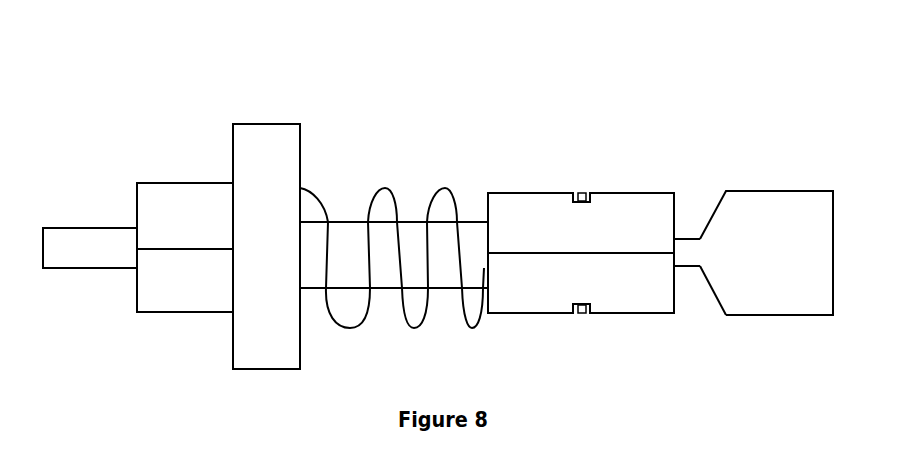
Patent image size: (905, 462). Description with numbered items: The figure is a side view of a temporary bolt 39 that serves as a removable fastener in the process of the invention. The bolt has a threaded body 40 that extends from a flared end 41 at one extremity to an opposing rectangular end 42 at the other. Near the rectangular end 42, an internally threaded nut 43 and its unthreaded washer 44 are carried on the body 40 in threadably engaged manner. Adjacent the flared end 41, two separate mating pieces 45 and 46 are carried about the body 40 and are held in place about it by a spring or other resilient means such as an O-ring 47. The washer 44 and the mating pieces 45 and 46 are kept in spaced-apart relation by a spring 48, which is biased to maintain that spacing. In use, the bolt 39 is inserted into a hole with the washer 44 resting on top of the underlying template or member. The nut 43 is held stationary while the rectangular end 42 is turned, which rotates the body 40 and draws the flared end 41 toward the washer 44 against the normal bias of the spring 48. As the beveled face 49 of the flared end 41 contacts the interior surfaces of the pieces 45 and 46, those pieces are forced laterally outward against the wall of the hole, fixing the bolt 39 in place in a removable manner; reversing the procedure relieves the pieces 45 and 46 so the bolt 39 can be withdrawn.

The temporary bolt 39 is at (447, 203).
The body 40 is at (351, 247).
The flared end 41 is at (793, 217).
The rectangular end 42 is at (71, 240).
The internally threaded nut 43 is at (165, 190).
The unthreaded washer 44 is at (269, 154).
The mating piece 45 is at (621, 290).
The mating piece 46 is at (635, 220).
The O-ring 47 is at (583, 193).
The spring 48 is at (312, 192).
The beveled face 49 is at (717, 297).